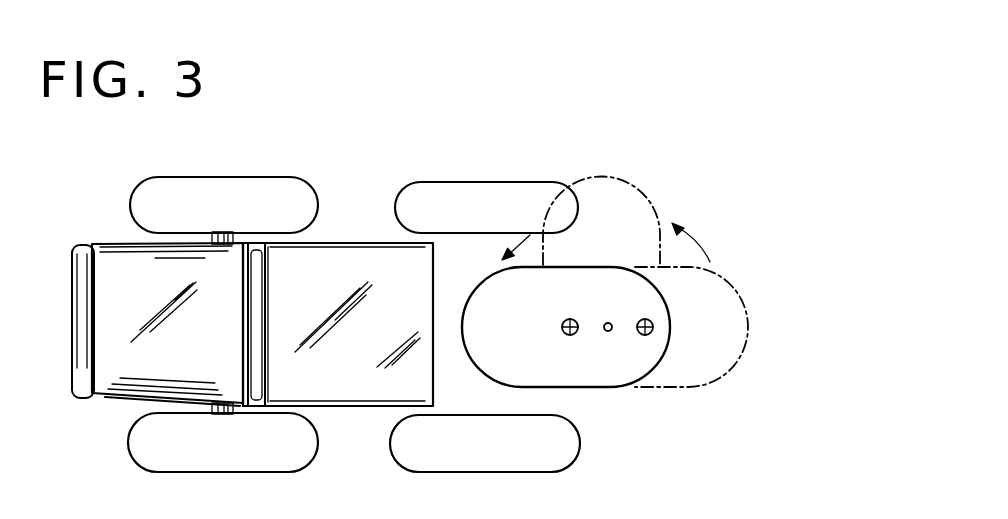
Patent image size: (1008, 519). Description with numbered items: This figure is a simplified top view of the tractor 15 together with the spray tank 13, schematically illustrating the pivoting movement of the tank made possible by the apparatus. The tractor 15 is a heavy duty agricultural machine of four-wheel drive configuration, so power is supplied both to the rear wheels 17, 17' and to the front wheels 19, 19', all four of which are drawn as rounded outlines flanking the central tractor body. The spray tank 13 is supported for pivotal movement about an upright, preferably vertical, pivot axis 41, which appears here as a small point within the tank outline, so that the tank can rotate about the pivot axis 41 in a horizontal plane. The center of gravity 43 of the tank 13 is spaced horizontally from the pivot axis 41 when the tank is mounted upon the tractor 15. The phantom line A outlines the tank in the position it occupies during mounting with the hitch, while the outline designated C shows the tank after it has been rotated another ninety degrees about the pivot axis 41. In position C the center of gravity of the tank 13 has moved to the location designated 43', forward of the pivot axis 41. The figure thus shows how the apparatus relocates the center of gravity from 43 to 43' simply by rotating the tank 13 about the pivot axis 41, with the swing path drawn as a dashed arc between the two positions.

The spray tank 13 is at (655, 198).
The tractor 15 is at (117, 238).
The rear wheel 17 is at (521, 443).
The rear wheel 17' is at (486, 176).
The front wheel 19 is at (187, 447).
The front wheel 19' is at (243, 179).
The pivot axis 41 is at (609, 322).
The center of gravity 43 is at (686, 313).
The center of gravity position 43' is at (542, 308).
The phantom line position A is at (748, 338).
The rotated tank position C is at (481, 378).